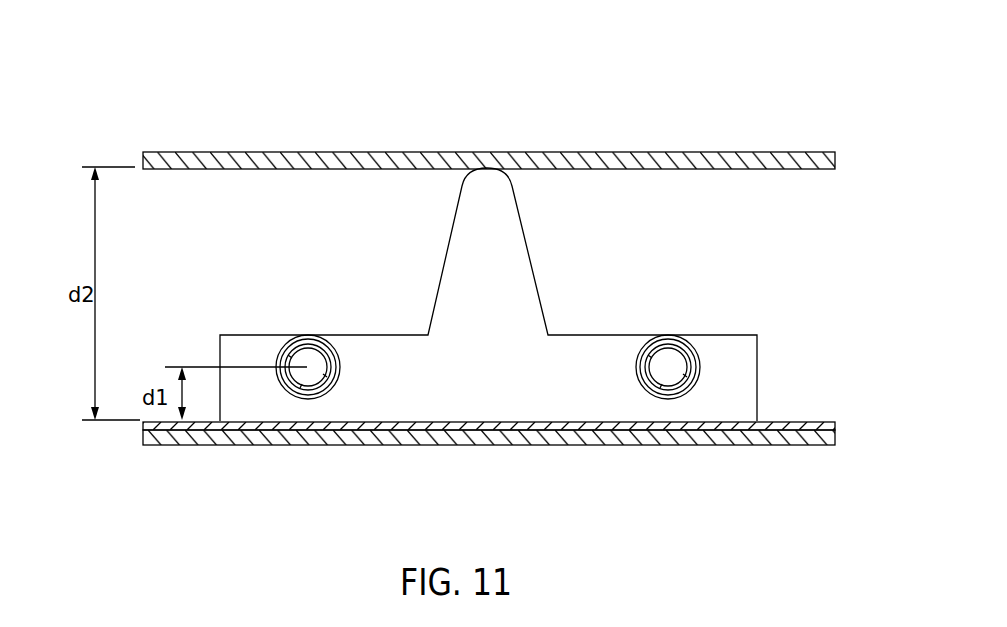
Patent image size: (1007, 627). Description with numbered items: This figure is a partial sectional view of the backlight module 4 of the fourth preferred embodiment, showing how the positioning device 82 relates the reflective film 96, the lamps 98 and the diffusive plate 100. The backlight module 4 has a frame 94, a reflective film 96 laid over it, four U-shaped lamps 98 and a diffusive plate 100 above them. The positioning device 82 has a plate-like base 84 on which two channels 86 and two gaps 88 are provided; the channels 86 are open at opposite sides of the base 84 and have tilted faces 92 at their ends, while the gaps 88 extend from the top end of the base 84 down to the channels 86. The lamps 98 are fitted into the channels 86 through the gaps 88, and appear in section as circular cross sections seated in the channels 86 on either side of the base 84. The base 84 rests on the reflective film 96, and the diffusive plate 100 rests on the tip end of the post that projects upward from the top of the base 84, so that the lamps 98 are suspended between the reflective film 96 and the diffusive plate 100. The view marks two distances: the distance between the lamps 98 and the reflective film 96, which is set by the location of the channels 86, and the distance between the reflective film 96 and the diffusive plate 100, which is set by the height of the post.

The backlight module 4 is at (673, 108).
The diffusive plate 100 is at (741, 158).
The positioning device 82 is at (766, 306).
The base 84 is at (498, 397).
The channel 86 is at (292, 339).
The gap 88 is at (309, 336).
The tilted face 92 is at (289, 394).
The lamp 98 is at (327, 394).
The reflective film 96 is at (790, 422).
The frame 94 is at (760, 466).